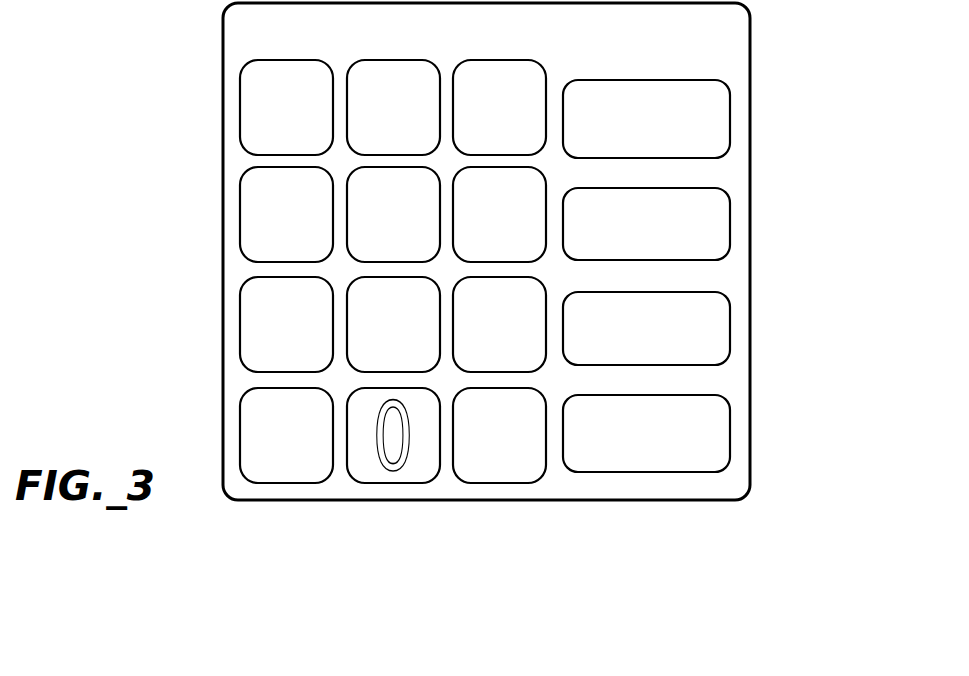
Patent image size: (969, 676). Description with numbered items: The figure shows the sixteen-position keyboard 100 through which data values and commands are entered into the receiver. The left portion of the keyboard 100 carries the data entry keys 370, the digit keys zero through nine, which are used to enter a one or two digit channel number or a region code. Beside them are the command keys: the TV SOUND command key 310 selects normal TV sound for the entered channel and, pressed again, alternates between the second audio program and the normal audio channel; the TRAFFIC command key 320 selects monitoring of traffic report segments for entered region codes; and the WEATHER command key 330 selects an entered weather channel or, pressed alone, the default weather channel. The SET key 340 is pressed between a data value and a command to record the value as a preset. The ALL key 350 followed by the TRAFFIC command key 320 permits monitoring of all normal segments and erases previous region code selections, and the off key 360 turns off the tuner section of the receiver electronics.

The keyboard 100 is at (750, 425).
The TV SOUND command key 310 is at (722, 119).
The TRAFFIC command key 320 is at (722, 228).
The WEATHER command key 330 is at (722, 333).
The SET key 340 is at (277, 470).
The ALL key 350 is at (497, 470).
The off key 360 is at (652, 462).
The data keys 370 is at (207, 375).